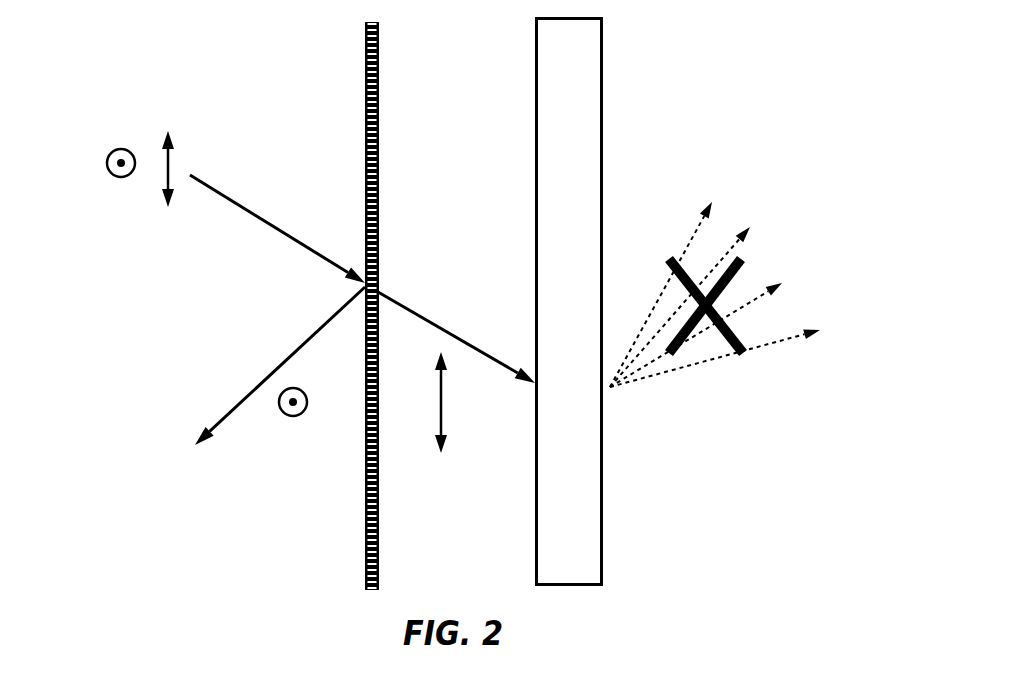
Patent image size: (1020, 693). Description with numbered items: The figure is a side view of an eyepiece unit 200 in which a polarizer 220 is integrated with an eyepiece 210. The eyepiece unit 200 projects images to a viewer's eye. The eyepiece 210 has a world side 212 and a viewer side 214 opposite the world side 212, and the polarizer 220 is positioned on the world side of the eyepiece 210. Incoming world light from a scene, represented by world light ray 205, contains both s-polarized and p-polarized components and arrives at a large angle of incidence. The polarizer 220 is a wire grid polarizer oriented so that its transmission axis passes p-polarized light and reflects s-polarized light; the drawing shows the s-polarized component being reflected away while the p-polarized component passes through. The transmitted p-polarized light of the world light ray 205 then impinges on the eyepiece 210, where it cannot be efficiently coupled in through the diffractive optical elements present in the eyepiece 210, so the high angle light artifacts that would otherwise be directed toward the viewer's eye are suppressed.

The eyepiece unit 200 is at (740, 68).
The world light ray 205 is at (225, 193).
The eyepiece 210 is at (605, 530).
The world side 212 is at (535, 527).
The viewer side 214 is at (605, 463).
The polarizer 220 is at (365, 95).